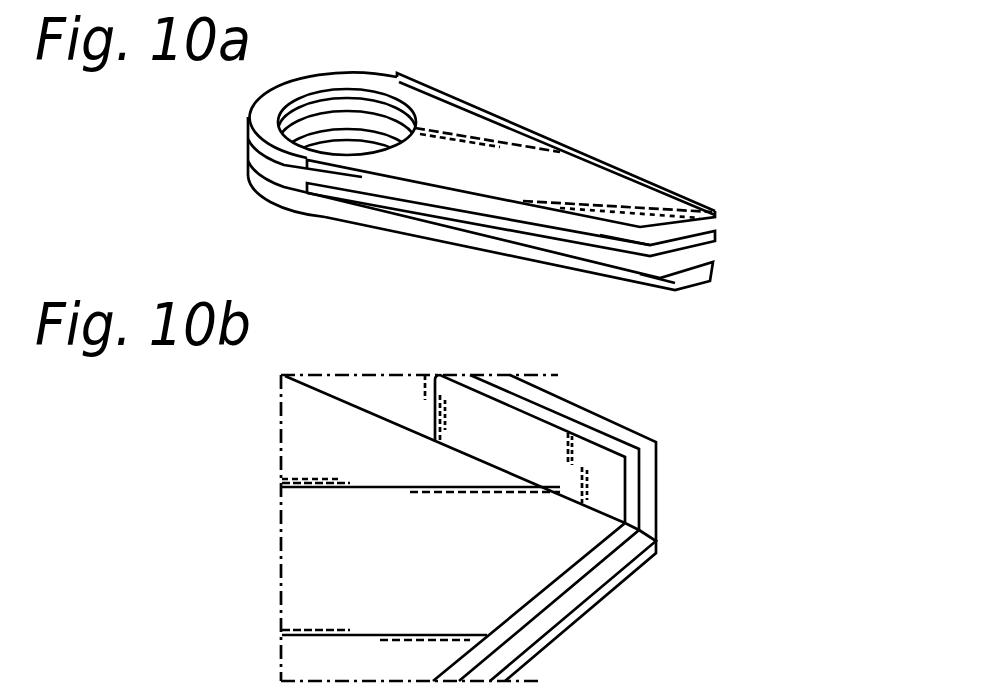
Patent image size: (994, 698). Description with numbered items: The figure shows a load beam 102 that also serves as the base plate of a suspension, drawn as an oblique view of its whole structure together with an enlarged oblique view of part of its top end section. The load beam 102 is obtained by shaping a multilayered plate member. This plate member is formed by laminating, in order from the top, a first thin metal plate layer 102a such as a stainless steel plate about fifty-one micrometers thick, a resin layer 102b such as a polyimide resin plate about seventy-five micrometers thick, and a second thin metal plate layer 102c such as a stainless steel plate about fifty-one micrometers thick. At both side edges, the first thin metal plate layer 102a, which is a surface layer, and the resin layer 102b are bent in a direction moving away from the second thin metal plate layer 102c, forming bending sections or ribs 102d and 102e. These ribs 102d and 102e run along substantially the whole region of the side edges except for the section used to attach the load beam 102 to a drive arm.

In FIG. 10A, the load beam 102 is at (528, 112).
In FIG. 10A, the first thin metal plate layer 102a is at (602, 195).
In FIG. 10B, the first thin metal plate layer 102a is at (490, 637).
In FIG. 10A, the resin layer 102b is at (697, 247).
In FIG. 10B, the resin layer 102b is at (543, 617).
In FIG. 10A, the second thin metal plate layer 102c is at (690, 279).
In FIG. 10B, the second thin metal plate layer 102c is at (600, 590).
In FIG. 10A, the bending section or rib 102d is at (708, 240).
In FIG. 10B, the bending section or rib 102d is at (597, 493).
In FIG. 10A, the bending section or rib 102e is at (603, 228).